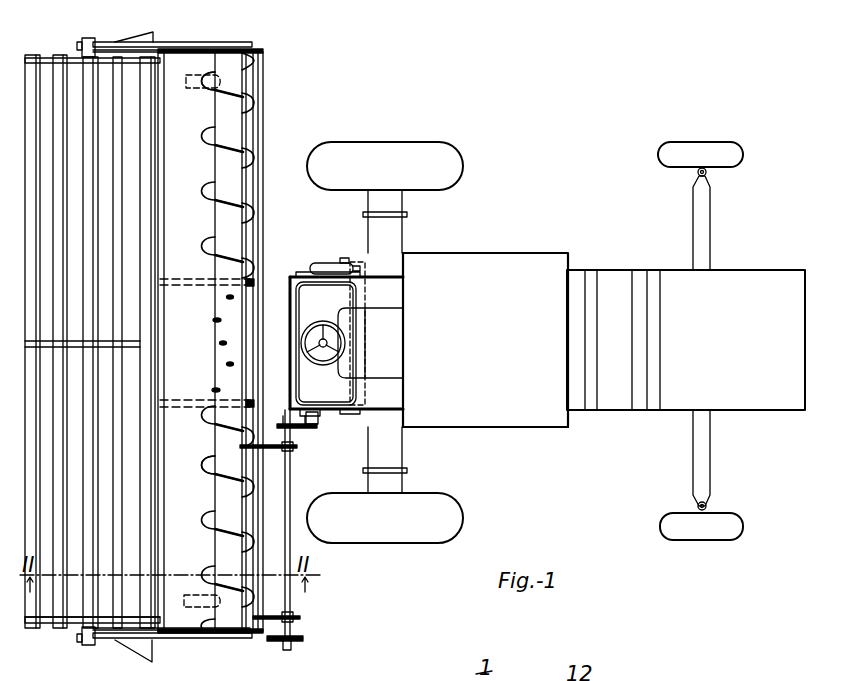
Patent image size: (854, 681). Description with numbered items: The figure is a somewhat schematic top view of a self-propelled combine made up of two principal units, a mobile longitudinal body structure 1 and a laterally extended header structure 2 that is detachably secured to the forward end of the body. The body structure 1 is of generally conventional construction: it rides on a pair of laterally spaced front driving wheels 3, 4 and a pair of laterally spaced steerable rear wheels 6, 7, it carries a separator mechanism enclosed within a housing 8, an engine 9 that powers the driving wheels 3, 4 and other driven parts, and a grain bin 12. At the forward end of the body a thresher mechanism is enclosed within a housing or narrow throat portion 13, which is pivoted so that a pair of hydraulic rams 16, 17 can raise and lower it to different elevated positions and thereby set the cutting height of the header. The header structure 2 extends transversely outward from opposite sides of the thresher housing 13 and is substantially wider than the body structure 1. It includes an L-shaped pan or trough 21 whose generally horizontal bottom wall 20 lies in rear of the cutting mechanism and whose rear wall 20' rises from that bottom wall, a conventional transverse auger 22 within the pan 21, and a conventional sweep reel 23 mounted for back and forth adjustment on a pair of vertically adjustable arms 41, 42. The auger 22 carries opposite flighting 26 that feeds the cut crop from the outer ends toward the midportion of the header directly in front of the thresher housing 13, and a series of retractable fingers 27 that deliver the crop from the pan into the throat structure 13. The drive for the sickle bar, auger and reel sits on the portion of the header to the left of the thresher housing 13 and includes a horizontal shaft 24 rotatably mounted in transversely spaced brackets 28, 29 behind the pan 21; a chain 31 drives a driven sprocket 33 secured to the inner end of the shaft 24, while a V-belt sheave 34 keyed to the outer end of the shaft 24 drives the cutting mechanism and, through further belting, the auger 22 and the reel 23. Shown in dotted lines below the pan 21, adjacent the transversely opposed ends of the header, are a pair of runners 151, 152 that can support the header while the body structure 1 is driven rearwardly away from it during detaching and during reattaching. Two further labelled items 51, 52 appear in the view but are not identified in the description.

The body structure 1 is at (498, 253).
The header structure 2 is at (290, 125).
The front driving wheel 3 is at (409, 541).
The front driving wheel 4 is at (428, 145).
The steerable rear wheel 6 is at (713, 538).
The steerable rear wheel 7 is at (695, 144).
The separator housing 8 is at (757, 275).
The engine 9 is at (607, 405).
The grain bin 12 is at (511, 421).
The thresher housing 13 is at (277, 292).
The hydraulic ram 16 is at (333, 414).
The hydraulic ram 17 is at (335, 268).
The bottom wall 20 is at (212, 342).
The rear wall 20' is at (281, 342).
The pan 21 is at (168, 626).
The transverse auger 22 is at (203, 456).
The sweep reel 23 is at (147, 516).
The horizontal shaft 24 is at (291, 488).
The flighting 26 is at (206, 200).
The retractable fingers 27 is at (226, 362).
The bracket 28 is at (295, 618).
The bracket 29 is at (293, 450).
The chain 31 is at (298, 428).
The driven sprocket 33 is at (283, 424).
The V-belt sheave 34 is at (289, 644).
The vertically adjustable arm 41 is at (193, 42).
The vertically adjustable arm 42 is at (205, 637).
The upper section line 51 is at (175, 280).
The lower section line 52 is at (185, 405).
The runner 151 is at (199, 88).
The runner 152 is at (198, 600).